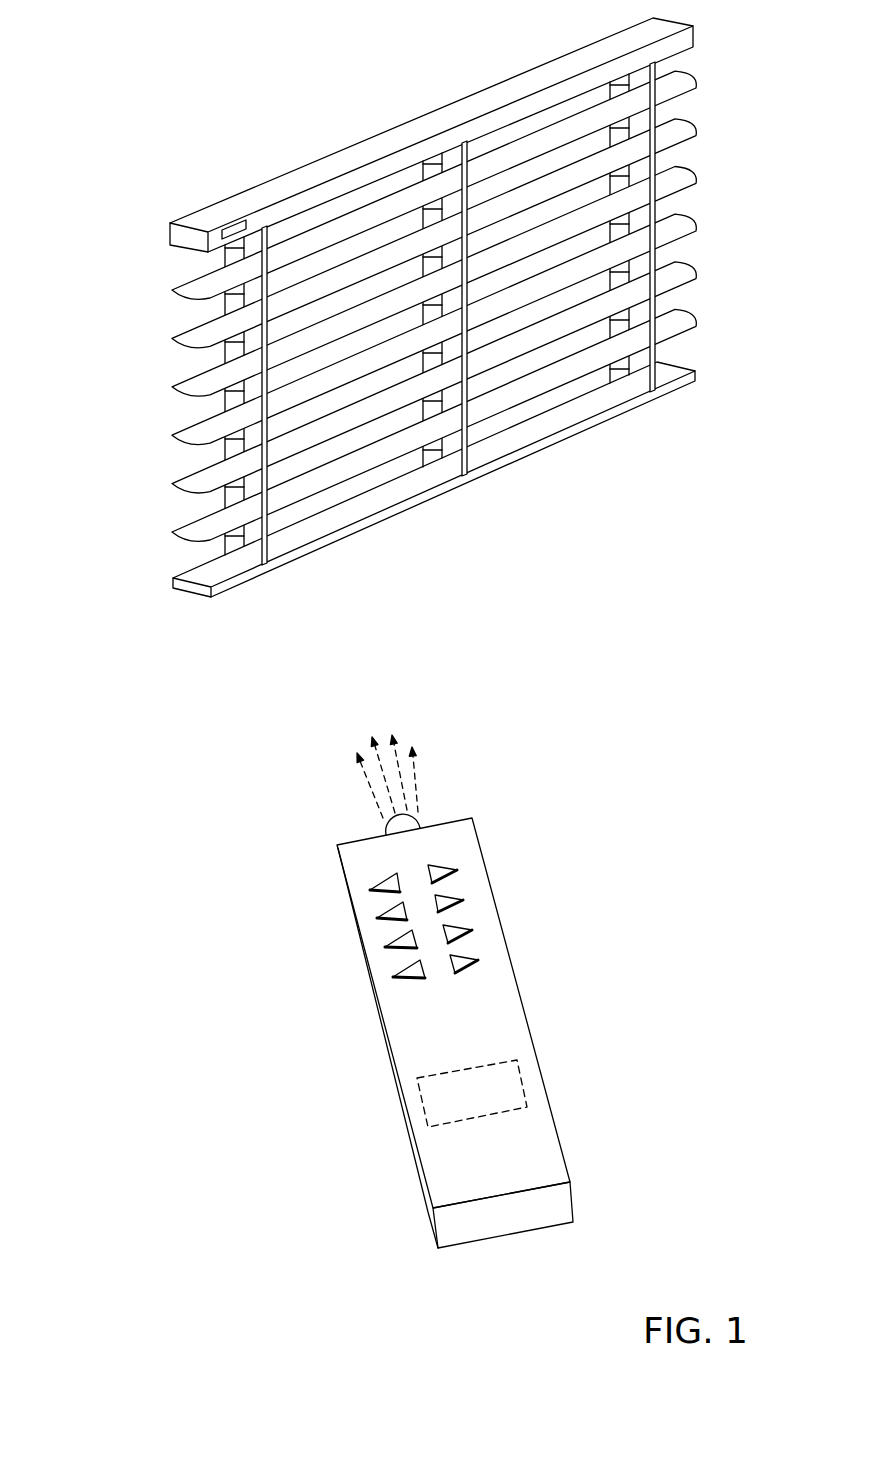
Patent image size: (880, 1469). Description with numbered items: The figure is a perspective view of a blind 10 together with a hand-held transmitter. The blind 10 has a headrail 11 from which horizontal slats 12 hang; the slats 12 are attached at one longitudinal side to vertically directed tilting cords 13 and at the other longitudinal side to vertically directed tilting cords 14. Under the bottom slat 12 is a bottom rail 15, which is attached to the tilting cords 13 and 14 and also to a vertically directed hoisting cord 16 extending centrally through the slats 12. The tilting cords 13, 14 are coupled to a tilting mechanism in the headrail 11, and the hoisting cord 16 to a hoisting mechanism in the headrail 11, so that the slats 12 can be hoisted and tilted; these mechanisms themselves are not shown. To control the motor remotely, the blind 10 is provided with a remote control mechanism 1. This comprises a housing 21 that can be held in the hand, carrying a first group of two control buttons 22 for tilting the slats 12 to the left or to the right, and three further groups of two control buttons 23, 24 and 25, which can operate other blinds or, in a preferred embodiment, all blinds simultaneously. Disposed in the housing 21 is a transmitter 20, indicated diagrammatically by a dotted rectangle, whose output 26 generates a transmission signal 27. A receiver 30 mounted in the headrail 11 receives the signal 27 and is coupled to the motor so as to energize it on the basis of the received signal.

The remote control mechanism 1 is at (452, 1001).
The blind 10 is at (433, 340).
The headrail 11 is at (413, 129).
The horizontal slats 12 is at (433, 310).
The tilting cords 13 is at (222, 489).
The tilting cords 14 is at (270, 550).
The bottom rail 15 is at (173, 579).
The hoisting cord 16 is at (245, 553).
The transmitter 20 is at (463, 1105).
The housing 21 is at (547, 1093).
The control buttons 22 is at (600, 848).
The control buttons 23 is at (600, 888).
The control buttons 24 is at (600, 935).
The control buttons 25 is at (431, 1014).
The output 26 is at (420, 818).
The transmission signal 27 is at (478, 712).
The receiver 30 is at (228, 226).